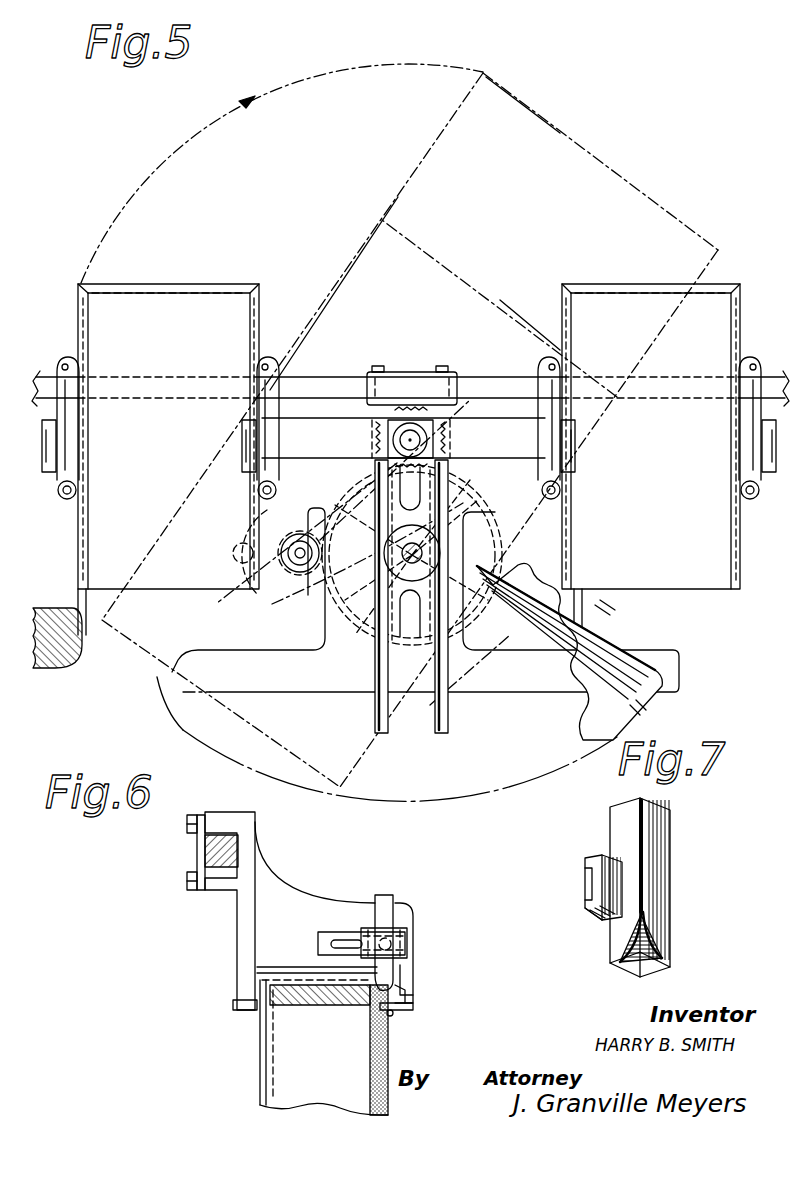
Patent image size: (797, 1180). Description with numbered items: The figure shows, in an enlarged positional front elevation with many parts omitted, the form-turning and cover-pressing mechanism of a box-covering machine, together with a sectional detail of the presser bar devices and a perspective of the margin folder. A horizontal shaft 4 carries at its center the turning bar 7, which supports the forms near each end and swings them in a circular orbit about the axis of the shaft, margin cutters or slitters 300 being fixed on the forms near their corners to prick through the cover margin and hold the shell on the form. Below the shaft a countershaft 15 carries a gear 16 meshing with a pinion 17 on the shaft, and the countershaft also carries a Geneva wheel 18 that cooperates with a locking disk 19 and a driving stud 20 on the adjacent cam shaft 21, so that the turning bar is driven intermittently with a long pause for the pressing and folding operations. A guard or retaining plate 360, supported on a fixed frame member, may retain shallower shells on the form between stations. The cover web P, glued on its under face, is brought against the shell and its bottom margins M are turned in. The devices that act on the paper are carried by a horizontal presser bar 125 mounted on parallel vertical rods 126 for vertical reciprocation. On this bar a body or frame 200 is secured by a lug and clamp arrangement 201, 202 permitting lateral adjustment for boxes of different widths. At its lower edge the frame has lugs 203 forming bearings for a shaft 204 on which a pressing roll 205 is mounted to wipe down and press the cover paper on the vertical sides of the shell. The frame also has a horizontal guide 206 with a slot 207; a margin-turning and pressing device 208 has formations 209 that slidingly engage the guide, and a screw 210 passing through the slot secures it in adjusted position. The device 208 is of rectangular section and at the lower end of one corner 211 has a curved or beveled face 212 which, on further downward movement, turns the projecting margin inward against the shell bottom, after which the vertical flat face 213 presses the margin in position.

In FIG. 5, the margin cutters or slitters 300 is at (261, 287).
In FIG. 6, the margin cutters or slitters 300 is at (272, 965).
In FIG. 5, the bottom margins M is at (167, 302).
In FIG. 5, the turning bar 7 is at (403, 438).
In FIG. 5, the pinion 17 is at (409, 406).
In FIG. 5, the horizontal shaft 4 is at (410, 428).
In FIG. 5, the lugs 203 is at (82, 487).
In FIG. 6, the lugs 203 is at (406, 985).
In FIG. 5, the shaft 204 is at (80, 495).
In FIG. 6, the shaft 204 is at (416, 996).
In FIG. 5, the pressing roll 205 is at (78, 499).
In FIG. 6, the pressing roll 205 is at (392, 1010).
In FIG. 5, the Geneva wheel 18 is at (498, 519).
In FIG. 5, the countershaft 15 is at (424, 552).
In FIG. 5, the gear 16 is at (496, 599).
In FIG. 5, the locking disk 19 is at (298, 598).
In FIG. 5, the driving stud 20 is at (238, 566).
In FIG. 5, the cam shaft 21 is at (293, 560).
In FIG. 5, the vertical rods 126 is at (388, 728).
In FIG. 5, the retaining plate 360 is at (646, 705).
In FIG. 5, the cover web P is at (46, 671).
In FIG. 6, the cover web P is at (262, 1039).
In FIG. 6, the lug 201 is at (218, 832).
In FIG. 6, the clamp 202 is at (198, 856).
In FIG. 6, the presser bar 125 is at (218, 874).
In FIG. 6, the body or frame 200 is at (302, 891).
In FIG. 6, the horizontal guide 206 is at (331, 930).
In FIG. 6, the slot 207 is at (347, 942).
In FIG. 6, the margin-turning and pressing device 208 is at (386, 911).
In FIG. 7, the margin-turning and pressing device 208 is at (672, 861).
In FIG. 6, the screw 210 is at (410, 932).
In FIG. 7, the vertical flat face 213 is at (608, 821).
In FIG. 7, the corner 211 is at (645, 829).
In FIG. 7, the curved or beveled face 212 is at (660, 951).
In FIG. 7, the formations 209 is at (584, 867).